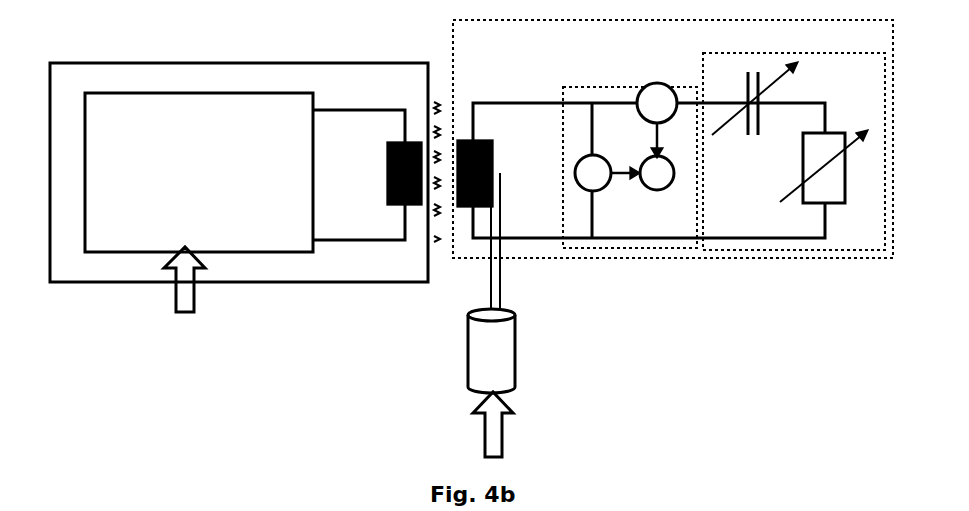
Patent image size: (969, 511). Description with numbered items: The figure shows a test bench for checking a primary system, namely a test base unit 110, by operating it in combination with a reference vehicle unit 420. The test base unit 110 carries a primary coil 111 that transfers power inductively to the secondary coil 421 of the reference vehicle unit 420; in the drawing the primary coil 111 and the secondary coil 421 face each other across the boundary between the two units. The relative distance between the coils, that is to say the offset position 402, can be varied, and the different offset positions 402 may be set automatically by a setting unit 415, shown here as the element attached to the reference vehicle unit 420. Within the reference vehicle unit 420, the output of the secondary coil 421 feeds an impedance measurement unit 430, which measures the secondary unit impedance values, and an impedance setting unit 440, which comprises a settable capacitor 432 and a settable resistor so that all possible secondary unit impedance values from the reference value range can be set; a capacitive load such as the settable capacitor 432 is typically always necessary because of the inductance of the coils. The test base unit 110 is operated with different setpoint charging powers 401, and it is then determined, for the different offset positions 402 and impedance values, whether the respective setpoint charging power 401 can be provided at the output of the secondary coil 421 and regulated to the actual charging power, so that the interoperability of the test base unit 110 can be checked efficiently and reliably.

The test base unit 110 is at (302, 63).
The primary coil 111 is at (396, 206).
The setpoint charging power 401 is at (194, 296).
The offset position 402 is at (502, 420).
The setting unit 415 is at (508, 330).
The reference vehicle unit 420 is at (651, 258).
The secondary coil 421 is at (487, 140).
The impedance measurement unit 430 is at (586, 87).
The variable capacitor 432 is at (752, 138).
The impedance setting unit 440 is at (767, 252).